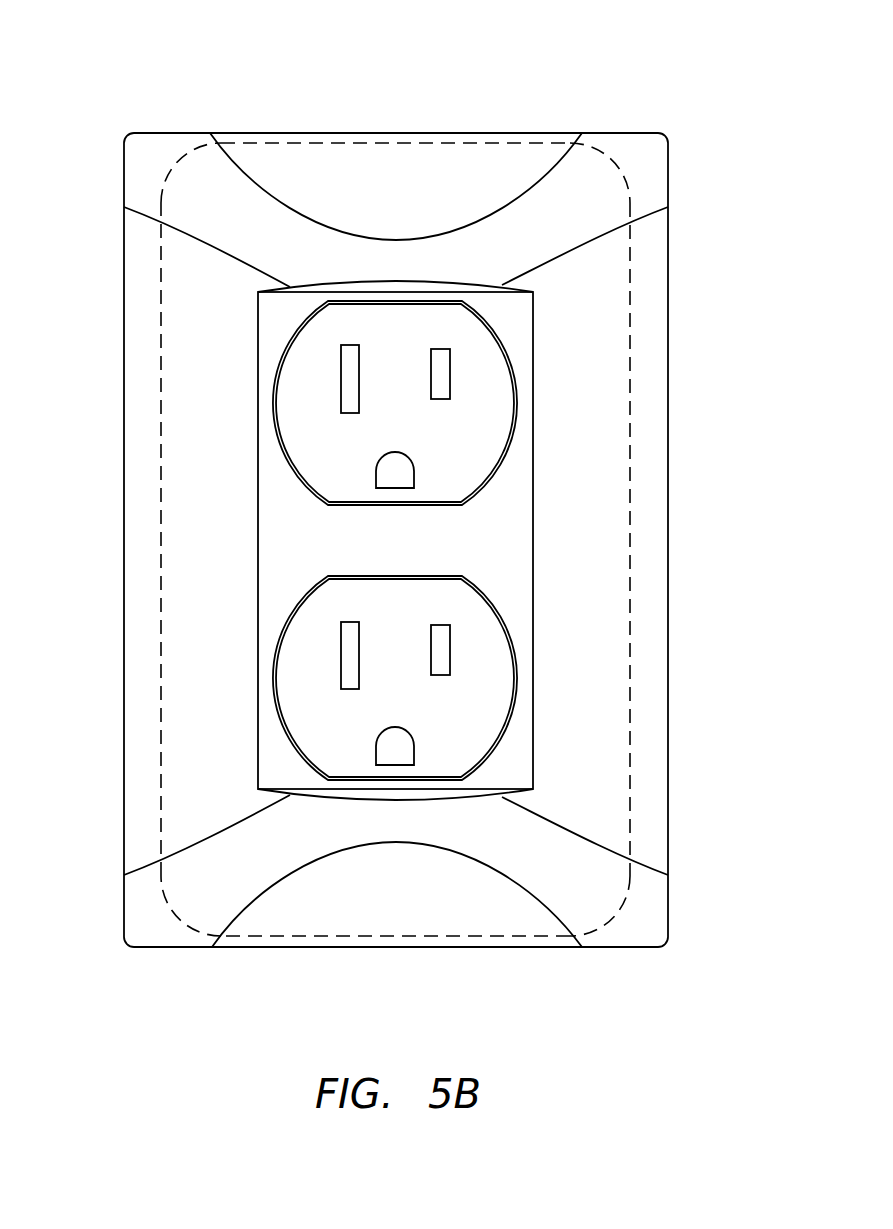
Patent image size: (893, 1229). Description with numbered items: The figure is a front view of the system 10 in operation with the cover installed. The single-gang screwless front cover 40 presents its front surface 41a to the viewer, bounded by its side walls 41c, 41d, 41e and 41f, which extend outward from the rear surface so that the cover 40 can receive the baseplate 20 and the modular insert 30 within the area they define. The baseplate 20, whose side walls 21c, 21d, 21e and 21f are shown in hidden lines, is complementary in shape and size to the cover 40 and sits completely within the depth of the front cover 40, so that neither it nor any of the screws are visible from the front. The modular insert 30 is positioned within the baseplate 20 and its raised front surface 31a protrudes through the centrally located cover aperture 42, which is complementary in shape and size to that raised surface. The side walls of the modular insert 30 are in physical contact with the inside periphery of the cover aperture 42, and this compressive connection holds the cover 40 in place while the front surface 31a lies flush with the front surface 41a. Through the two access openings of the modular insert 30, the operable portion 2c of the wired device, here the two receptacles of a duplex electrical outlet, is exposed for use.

The system 10 is at (110, 90).
The single-gang screwless front cover 40 is at (122, 355).
The front surface 41a is at (455, 176).
The side wall 41c is at (668, 644).
The side wall 41d is at (124, 465).
The side wall 41e is at (222, 133).
The side wall 41f is at (438, 947).
The baseplate 20 is at (632, 513).
The side wall 21c is at (630, 327).
The side wall 21d is at (160, 619).
The side wall 21e is at (345, 142).
The side wall 21f is at (342, 936).
The modular insert 30 is at (305, 540).
The front surface 31a is at (422, 558).
The cover aperture 42 is at (537, 464).
The operable portion 2c is at (485, 357).